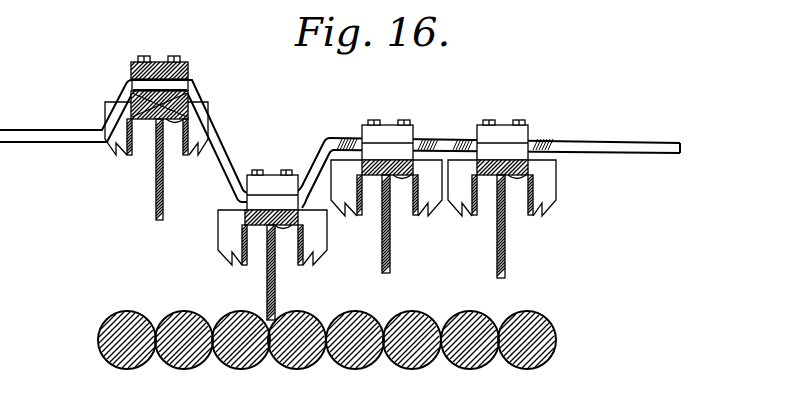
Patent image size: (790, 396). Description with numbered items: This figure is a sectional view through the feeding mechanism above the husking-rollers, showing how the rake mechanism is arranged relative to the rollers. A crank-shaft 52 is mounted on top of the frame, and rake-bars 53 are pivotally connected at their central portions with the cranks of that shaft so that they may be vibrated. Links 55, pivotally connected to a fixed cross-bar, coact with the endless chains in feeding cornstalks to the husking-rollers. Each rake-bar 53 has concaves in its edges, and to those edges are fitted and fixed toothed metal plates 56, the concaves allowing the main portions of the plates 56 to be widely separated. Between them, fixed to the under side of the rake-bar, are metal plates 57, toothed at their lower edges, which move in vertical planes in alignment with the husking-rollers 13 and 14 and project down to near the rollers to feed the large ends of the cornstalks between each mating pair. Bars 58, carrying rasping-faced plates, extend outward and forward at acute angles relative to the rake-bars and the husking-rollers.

The husking-roller 13 is at (309, 311).
The husking-roller 14 is at (139, 311).
The crank-shaft 52 is at (42, 132).
The rake-bar 53 is at (150, 108).
The link 55 is at (396, 169).
The toothed metal plate 56 is at (128, 153).
The toothed plate 57 is at (317, 219).
The bar 58 is at (531, 178).